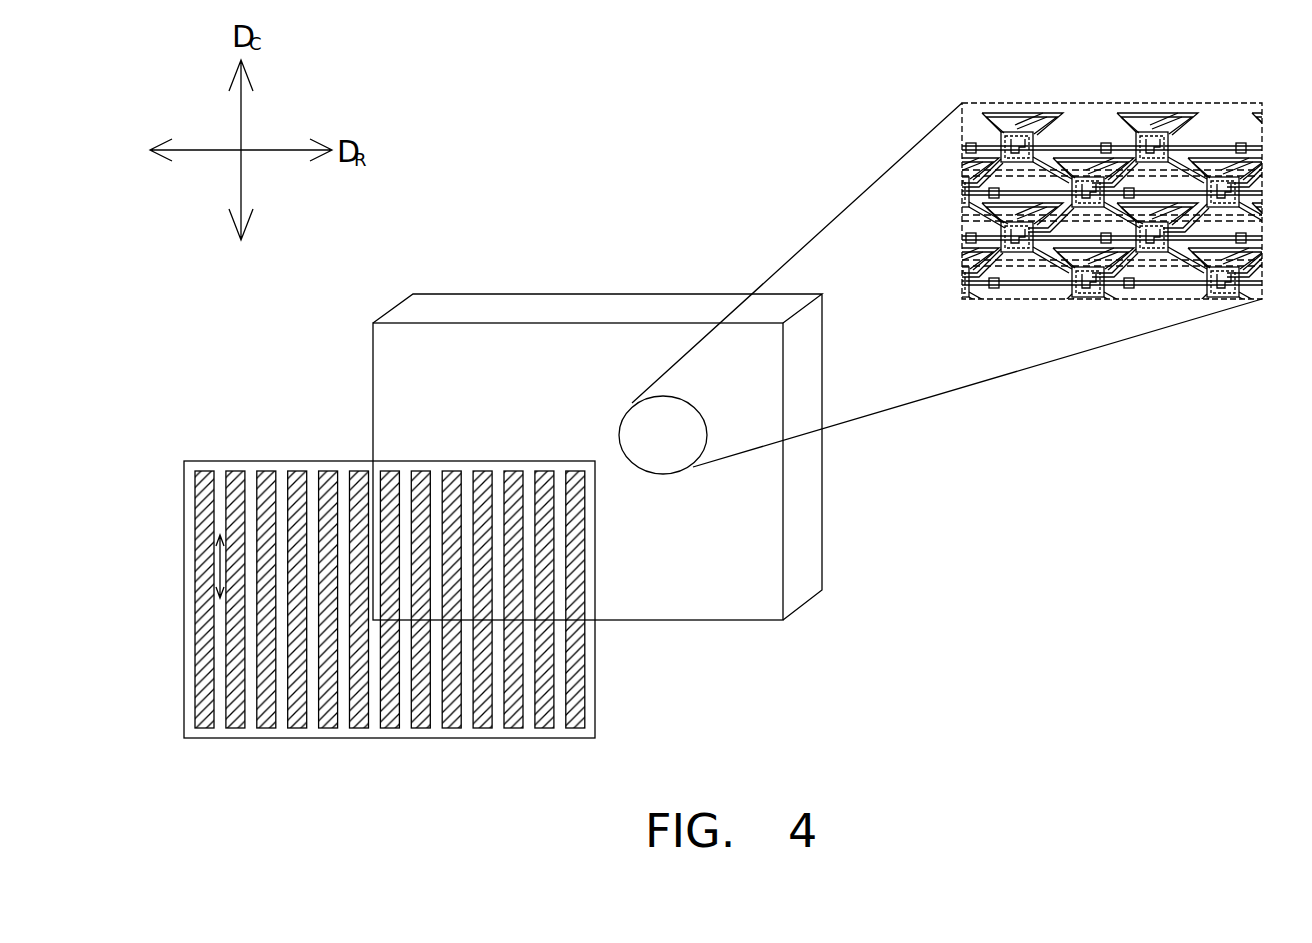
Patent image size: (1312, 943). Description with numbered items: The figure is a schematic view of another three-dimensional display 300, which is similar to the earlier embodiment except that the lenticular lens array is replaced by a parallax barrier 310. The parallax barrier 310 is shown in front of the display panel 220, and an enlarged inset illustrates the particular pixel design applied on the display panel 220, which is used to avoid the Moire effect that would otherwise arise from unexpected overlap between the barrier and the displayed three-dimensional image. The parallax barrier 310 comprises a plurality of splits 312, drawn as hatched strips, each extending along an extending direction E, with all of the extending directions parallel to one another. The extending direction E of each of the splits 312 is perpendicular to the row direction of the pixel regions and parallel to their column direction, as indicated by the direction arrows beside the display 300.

The three-dimensional display 300 is at (727, 454).
The display panel 220 is at (823, 540).
The parallax barrier 310 is at (420, 633).
The splits 312 is at (497, 712).
The extending direction E is at (213, 573).